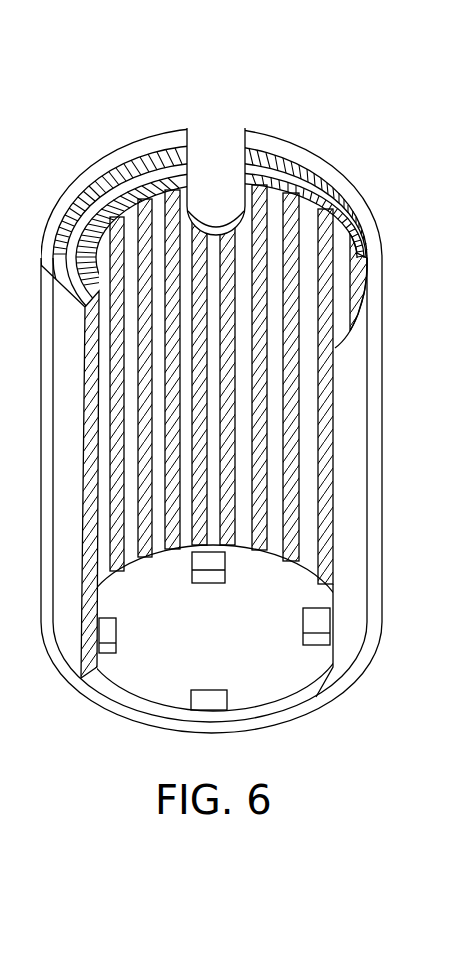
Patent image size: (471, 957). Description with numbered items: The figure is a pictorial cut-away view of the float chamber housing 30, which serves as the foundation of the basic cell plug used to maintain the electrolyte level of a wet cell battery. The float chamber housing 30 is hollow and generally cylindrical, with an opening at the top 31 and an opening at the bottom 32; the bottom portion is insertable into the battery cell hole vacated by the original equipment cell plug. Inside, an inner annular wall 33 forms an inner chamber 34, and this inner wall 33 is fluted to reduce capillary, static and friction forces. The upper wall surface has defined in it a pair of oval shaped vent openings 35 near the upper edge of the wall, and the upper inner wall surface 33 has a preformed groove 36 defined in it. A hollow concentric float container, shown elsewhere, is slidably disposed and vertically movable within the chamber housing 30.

The float chamber housing 30 is at (297, 49).
The top opening 31 is at (355, 190).
The bottom opening 32 is at (222, 651).
The inner annular wall 33 is at (140, 228).
The inner chamber 34 is at (265, 494).
The vent openings 35 is at (213, 176).
The groove 36 is at (275, 150).